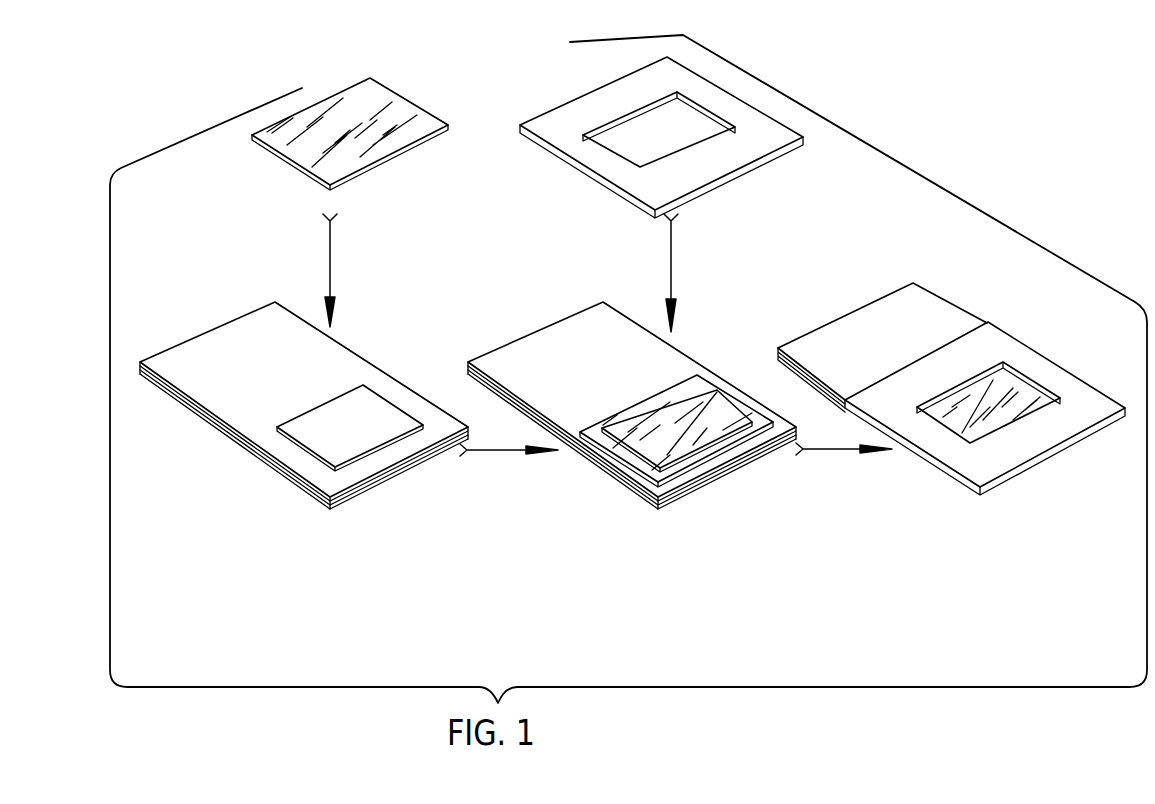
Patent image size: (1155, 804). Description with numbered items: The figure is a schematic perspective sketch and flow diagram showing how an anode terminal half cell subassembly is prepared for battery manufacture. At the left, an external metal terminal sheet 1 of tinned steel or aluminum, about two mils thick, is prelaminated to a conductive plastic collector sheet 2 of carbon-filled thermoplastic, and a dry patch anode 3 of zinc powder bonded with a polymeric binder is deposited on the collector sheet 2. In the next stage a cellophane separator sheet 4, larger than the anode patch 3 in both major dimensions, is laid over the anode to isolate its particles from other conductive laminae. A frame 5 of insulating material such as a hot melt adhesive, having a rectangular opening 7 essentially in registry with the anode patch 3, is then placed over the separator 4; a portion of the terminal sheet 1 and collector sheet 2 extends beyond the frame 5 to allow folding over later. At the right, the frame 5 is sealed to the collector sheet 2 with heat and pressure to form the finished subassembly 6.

The external metal terminal sheet 1 is at (192, 413).
The conductive plastic collector sheet 2 is at (205, 348).
The dry patch anode 3 is at (378, 415).
The cellophane separator sheet 4 is at (379, 96).
The frame 5 is at (767, 132).
The finished subassembly 6 is at (918, 469).
The rectangular opening 7 is at (690, 112).